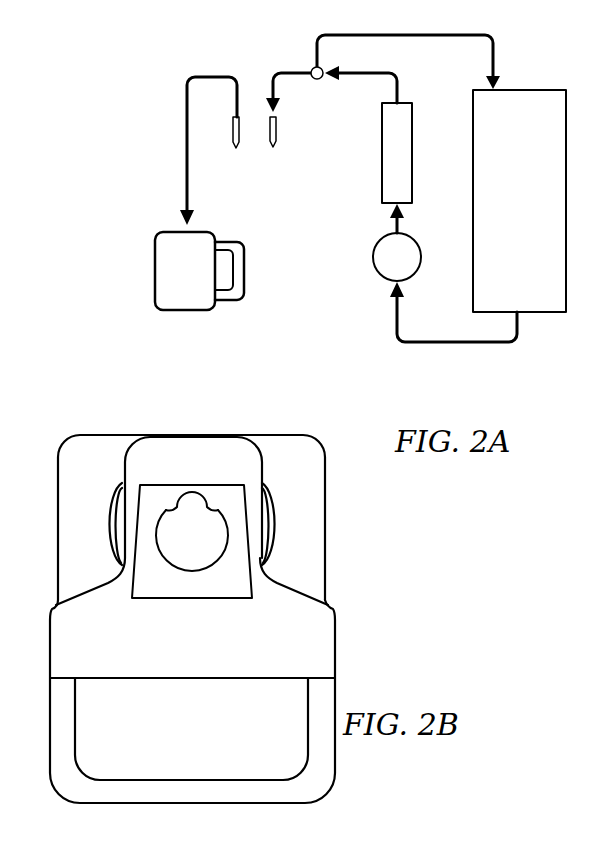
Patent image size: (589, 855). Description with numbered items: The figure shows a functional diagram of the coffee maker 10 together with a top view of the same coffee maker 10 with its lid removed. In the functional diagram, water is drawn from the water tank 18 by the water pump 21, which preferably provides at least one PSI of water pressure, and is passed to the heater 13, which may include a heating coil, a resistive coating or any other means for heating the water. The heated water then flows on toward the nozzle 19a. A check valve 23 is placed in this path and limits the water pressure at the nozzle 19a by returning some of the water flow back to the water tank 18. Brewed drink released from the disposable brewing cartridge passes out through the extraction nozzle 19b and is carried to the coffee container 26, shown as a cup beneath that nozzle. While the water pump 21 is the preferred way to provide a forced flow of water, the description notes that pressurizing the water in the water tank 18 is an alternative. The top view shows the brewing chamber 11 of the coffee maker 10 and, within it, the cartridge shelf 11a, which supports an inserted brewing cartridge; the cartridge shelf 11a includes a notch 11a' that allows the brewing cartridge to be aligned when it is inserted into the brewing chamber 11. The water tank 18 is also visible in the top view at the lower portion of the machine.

In FIG. 2B, the coffee maker 10 is at (279, 425).
In FIG. 2B, the brewing chamber 11 is at (166, 518).
In FIG. 2B, the cartridge shelf 11a is at (192, 540).
In FIG. 2B, the notch 11a' is at (198, 520).
In FIG. 2A, the heater 13 is at (390, 178).
In FIG. 2A, the water tank 18 is at (528, 157).
In FIG. 2B, the water tank 18 is at (262, 730).
In FIG. 2A, the nozzle 19a is at (273, 148).
In FIG. 2A, the extraction nozzle 19b is at (235, 146).
In FIG. 2A, the water pump 21 is at (392, 258).
In FIG. 2A, the check valve 23 is at (313, 82).
In FIG. 2A, the coffee container 26 is at (196, 270).